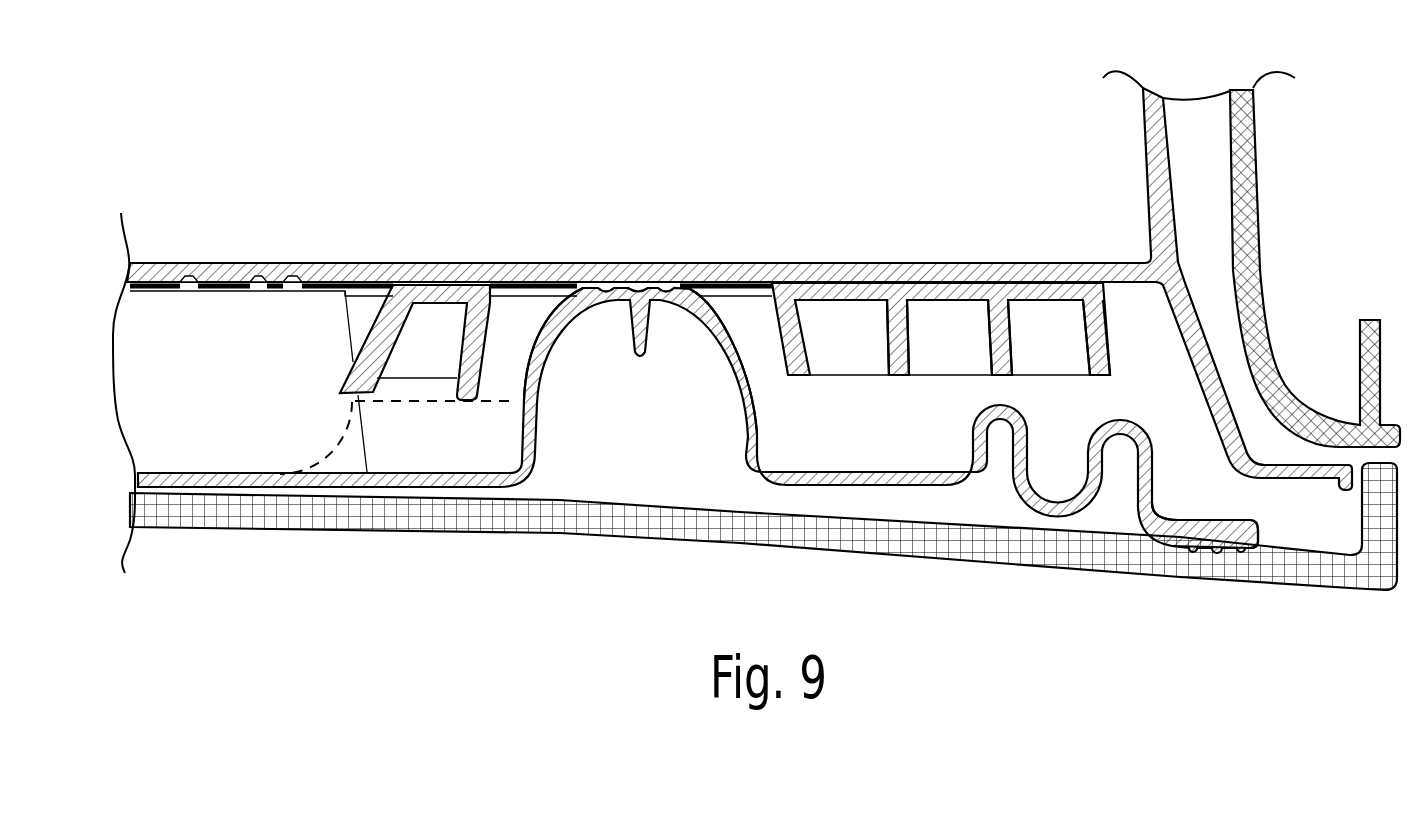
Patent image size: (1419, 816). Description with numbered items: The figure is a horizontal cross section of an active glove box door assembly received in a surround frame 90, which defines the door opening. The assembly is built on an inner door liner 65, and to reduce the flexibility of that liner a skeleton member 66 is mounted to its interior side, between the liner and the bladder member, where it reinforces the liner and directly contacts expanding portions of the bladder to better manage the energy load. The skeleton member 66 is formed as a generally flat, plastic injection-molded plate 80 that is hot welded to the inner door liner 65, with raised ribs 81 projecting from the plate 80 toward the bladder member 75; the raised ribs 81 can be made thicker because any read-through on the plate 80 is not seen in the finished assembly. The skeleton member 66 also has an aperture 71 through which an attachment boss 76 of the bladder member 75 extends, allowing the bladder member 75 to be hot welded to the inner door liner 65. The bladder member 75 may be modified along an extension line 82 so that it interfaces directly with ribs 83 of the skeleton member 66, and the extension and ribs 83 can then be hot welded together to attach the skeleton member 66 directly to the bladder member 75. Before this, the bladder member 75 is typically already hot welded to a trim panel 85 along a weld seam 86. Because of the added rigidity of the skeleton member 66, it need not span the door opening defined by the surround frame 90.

The inner door liner 65 is at (582, 252).
The skeleton member 66 is at (1115, 317).
The aperture 71 is at (748, 294).
The bladder member 75 is at (416, 499).
The attachment boss 76 is at (535, 380).
The plate 80 is at (824, 292).
The raised ribs 81 is at (985, 340).
The extension line 82 is at (323, 437).
The ribs 83 is at (458, 348).
The trim panel 85 is at (544, 546).
The weld seam 86 is at (1223, 549).
The surround frame 90 is at (1260, 205).